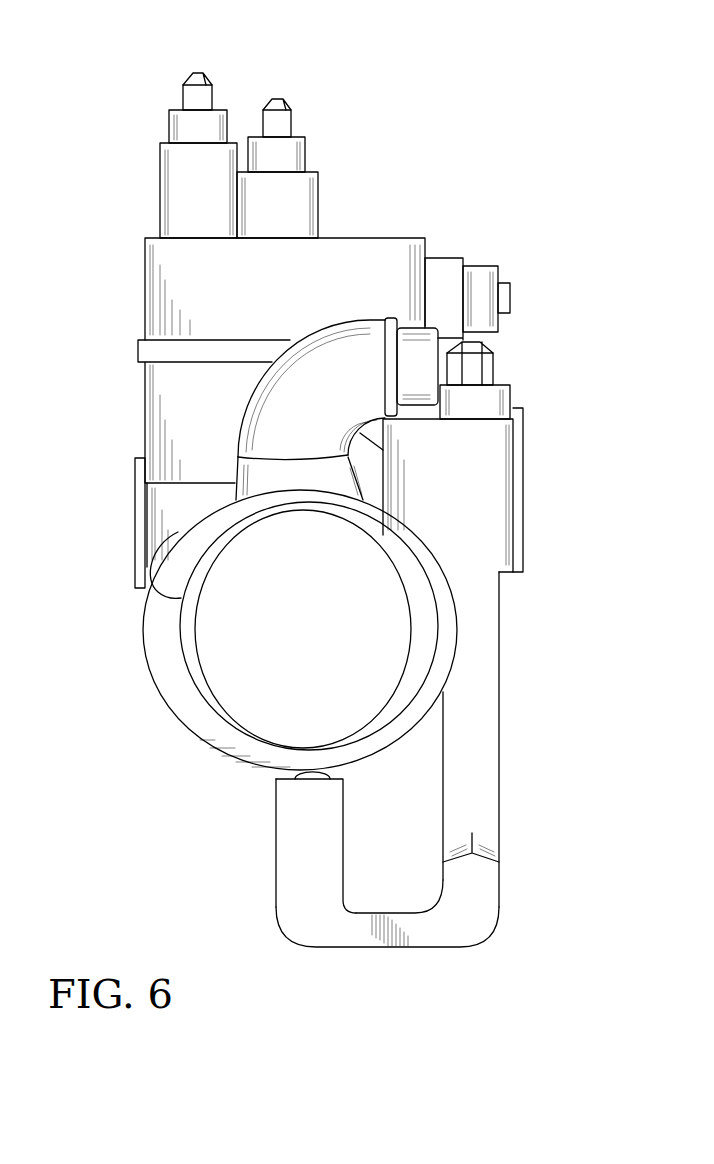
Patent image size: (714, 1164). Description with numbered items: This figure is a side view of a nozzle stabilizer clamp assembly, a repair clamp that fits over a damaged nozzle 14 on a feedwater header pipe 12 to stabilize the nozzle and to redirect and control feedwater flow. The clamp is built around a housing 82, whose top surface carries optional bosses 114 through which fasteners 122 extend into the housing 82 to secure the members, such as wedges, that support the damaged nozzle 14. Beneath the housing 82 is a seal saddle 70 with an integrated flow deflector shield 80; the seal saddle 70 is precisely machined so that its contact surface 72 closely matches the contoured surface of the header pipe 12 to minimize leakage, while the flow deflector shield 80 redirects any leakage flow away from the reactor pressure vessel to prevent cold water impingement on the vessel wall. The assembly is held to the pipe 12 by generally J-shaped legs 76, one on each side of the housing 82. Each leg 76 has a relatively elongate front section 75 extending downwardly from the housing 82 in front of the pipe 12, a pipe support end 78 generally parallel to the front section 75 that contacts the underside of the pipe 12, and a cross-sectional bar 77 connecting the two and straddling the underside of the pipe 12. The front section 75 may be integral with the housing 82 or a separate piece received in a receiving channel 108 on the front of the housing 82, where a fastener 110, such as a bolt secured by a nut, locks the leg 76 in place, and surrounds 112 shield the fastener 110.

The pipe 12 is at (213, 690).
The nozzle 14 is at (283, 397).
The seal saddle 70 is at (148, 508).
The contact surface 72 is at (148, 598).
The front section 75 is at (499, 608).
The clamp leg 76 is at (499, 762).
The cross-sectional bar 77 is at (437, 922).
The pipe support end 78 is at (305, 805).
The flow deflector shield 80 is at (135, 458).
The housing 82 is at (187, 285).
The receiving channel 108 is at (487, 460).
The fastener 110 is at (510, 300).
The surround 112 is at (180, 120).
The boss 114 is at (197, 202).
The fastener 122 is at (212, 85).